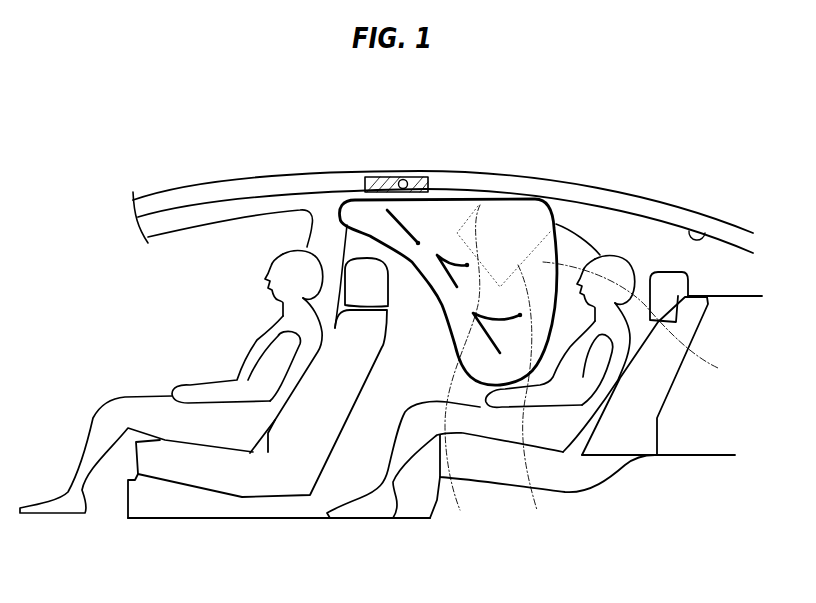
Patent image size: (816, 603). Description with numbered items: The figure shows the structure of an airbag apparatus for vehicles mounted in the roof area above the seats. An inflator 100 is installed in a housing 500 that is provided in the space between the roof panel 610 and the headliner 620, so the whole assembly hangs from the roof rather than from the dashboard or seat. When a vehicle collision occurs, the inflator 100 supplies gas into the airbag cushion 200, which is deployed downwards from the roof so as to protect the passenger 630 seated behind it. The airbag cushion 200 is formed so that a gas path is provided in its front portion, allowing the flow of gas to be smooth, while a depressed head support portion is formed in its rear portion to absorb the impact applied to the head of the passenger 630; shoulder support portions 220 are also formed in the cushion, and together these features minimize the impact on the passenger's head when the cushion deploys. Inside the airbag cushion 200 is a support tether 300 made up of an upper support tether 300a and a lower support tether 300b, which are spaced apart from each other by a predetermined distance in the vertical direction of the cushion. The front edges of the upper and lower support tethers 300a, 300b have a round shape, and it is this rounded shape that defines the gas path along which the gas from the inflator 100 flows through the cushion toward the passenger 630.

The inflator 100 is at (407, 180).
The airbag cushion 200 is at (551, 197).
The shoulder support portions 220 is at (654, 322).
The support tether 300 is at (497, 391).
The upper support tether 300a is at (464, 374).
The lower support tether 300b is at (532, 404).
The housing 500 is at (377, 175).
The roof panel 610 is at (650, 195).
The headliner 620 is at (703, 229).
The passenger 630 is at (605, 385).